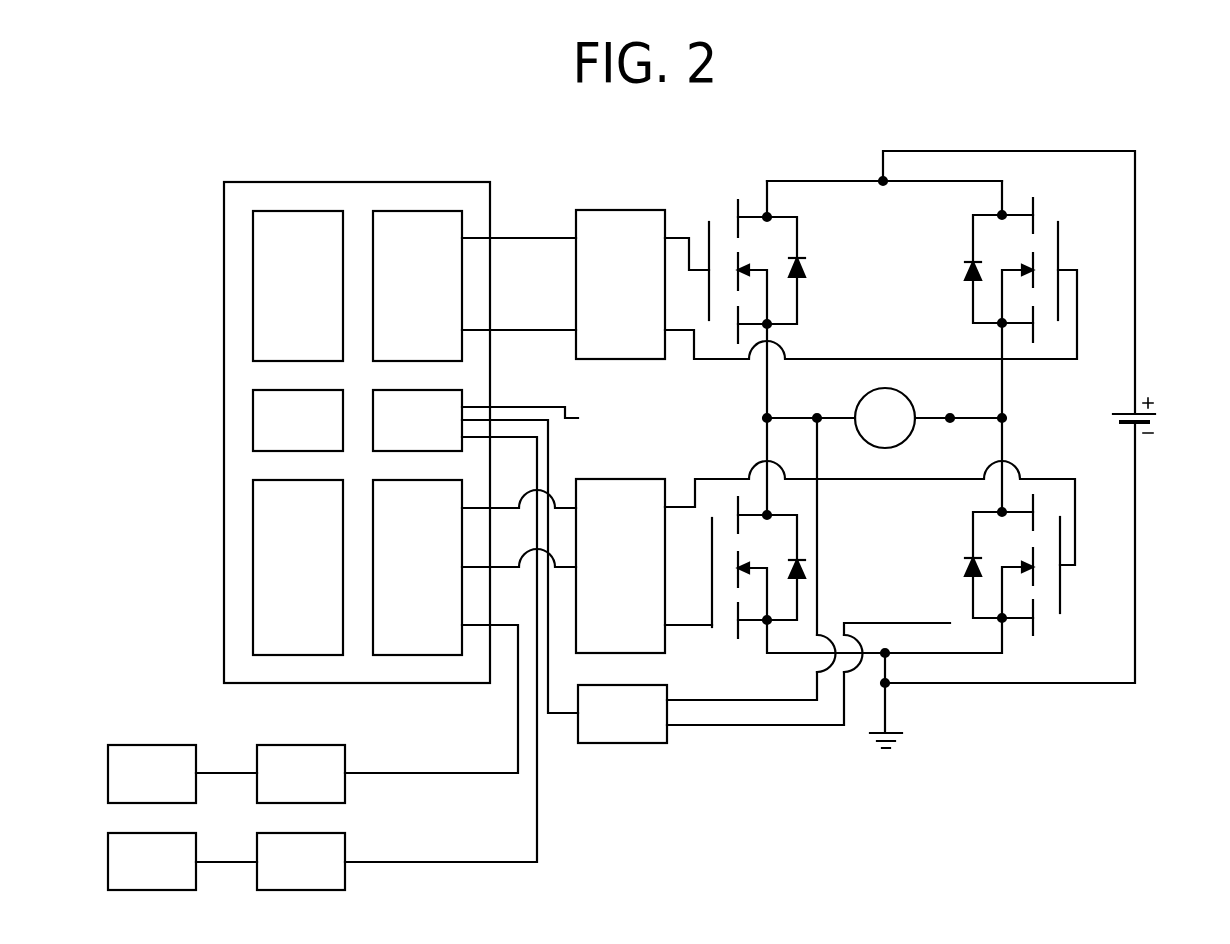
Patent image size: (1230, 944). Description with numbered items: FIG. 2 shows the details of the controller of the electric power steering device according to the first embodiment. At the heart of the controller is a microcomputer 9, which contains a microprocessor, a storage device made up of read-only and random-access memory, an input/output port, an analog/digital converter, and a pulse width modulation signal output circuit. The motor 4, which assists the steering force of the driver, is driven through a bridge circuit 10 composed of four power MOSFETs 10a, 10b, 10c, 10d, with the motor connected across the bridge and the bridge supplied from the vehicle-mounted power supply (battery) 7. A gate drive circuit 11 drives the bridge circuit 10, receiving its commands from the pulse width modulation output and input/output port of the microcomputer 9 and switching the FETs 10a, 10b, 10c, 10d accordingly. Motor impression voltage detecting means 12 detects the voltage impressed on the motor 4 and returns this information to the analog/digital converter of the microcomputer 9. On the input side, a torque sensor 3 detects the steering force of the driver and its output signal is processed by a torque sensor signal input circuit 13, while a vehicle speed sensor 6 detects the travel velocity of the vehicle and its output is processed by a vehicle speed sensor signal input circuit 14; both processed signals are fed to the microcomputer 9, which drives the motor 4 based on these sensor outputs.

The torque sensor 3 is at (115, 843).
The motor 4 is at (888, 388).
The vehicle speed sensor 6 is at (115, 755).
The power supply (battery) 7 is at (1160, 421).
The microcomputer 9 is at (472, 192).
The bridge circuit 10 is at (922, 418).
The power MOSFET (FET) 10a is at (785, 255).
The power MOSFET (FET) 10b is at (985, 255).
The power MOSFET (FET) 10c is at (775, 565).
The power MOSFET (FET) 10d is at (1043, 623).
The gate drive circuit 11 is at (639, 220).
The motor impression voltage detecting means 12 is at (642, 732).
The torque sensor signal input circuit 13 is at (328, 840).
The vehicle speed sensor signal input circuit 14 is at (328, 752).